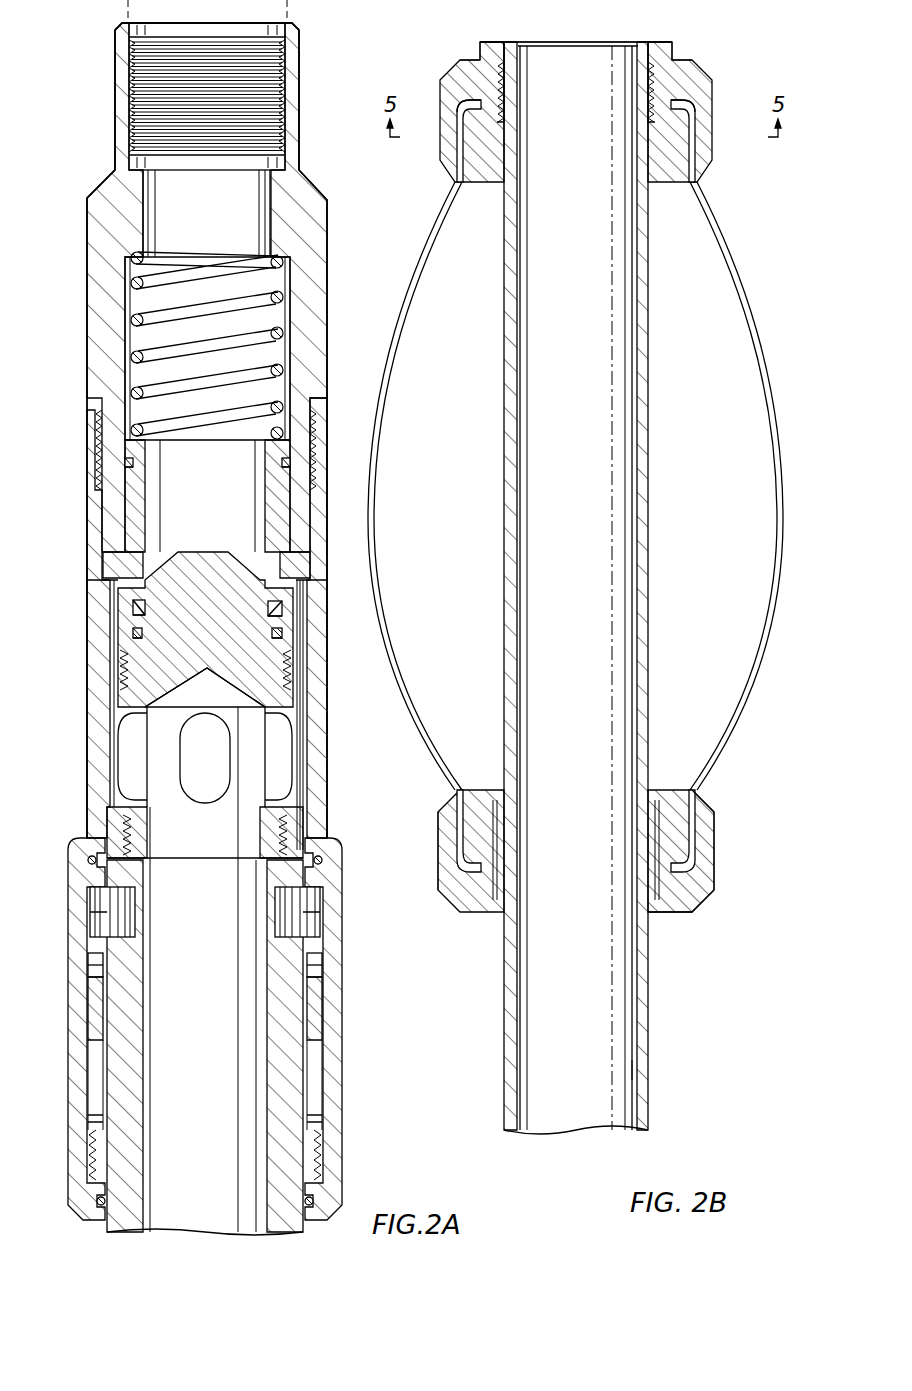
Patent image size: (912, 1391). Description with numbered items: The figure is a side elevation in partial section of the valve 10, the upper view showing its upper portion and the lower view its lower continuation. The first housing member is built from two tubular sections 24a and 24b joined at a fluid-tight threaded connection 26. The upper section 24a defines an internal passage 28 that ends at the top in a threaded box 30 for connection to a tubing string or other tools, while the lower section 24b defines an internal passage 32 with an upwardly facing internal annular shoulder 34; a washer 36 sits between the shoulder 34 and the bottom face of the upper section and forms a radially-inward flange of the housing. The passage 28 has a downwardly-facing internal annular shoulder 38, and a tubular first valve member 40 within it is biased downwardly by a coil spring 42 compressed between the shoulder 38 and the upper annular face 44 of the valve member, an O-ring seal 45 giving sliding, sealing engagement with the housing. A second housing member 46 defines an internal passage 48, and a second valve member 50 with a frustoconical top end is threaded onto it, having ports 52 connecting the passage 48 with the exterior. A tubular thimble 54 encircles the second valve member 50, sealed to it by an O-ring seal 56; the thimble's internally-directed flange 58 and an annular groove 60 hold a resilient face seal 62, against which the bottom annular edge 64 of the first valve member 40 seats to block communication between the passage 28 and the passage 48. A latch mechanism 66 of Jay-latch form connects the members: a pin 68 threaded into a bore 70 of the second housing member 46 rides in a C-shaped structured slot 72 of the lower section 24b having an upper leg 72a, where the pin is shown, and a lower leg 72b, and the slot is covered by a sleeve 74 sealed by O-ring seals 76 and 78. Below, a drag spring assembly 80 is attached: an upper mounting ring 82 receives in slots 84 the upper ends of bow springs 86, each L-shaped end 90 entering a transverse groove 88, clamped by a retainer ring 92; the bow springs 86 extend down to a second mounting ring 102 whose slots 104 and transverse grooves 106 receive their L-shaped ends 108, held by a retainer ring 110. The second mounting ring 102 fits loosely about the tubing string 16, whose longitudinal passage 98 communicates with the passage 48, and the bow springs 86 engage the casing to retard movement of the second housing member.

In FIG. 2A, the valve 10 is at (72, 270).
In FIG. 2B, the valve 10 is at (742, 62).
In FIG. 2B, the tubing string 16 is at (644, 1010).
In FIG. 2A, the upper section 24a is at (98, 354).
In FIG. 2A, the lower section 24b is at (90, 679).
In FIG. 2A, the threaded connection 26 is at (85, 459).
In FIG. 2A, the internal passage 28 is at (284, 285).
In FIG. 2A, the threaded box 30 is at (278, 78).
In FIG. 2A, the internal passage 32 is at (300, 762).
In FIG. 2A, the internal annular shoulder 34 is at (106, 583).
In FIG. 2A, the washer 36 is at (103, 569).
In FIG. 2A, the internal annular shoulder 38 is at (130, 250).
In FIG. 2A, the first valve member 40 is at (138, 518).
In FIG. 2A, the coil spring 42 is at (255, 331).
In FIG. 2A, the upper annular face 44 is at (126, 440).
In FIG. 2A, the O-ring seal 45 is at (126, 464).
In FIG. 2A, the second housing member 46 is at (283, 1087).
In FIG. 2B, the second housing member 46 is at (500, 42).
In FIG. 2A, the internal passage 48 is at (130, 1101).
In FIG. 2A, the second valve member 50 is at (140, 698).
In FIG. 2A, the ports 52 is at (130, 796).
In FIG. 2A, the thimble 54 is at (286, 674).
In FIG. 2A, the O-ring seal 56 is at (285, 637).
In FIG. 2A, the internally-directed flange 58 is at (272, 604).
In FIG. 2A, the annular groove 60 is at (283, 610).
In FIG. 2A, the face seal 62 is at (133, 610).
In FIG. 2A, the bottom annular edge 64 is at (283, 571).
In FIG. 2A, the latch mechanism 66 is at (70, 979).
In FIG. 2A, the pin 68 is at (313, 913).
In FIG. 2A, the threaded bore 70 is at (296, 930).
In FIG. 2A, the structured slot 72 is at (313, 1129).
In FIG. 2A, the upper leg 72a is at (313, 968).
In FIG. 2A, the lower leg 72b is at (316, 1049).
In FIG. 2A, the sleeve 74 is at (331, 1164).
In FIG. 2A, the O-ring seal 76 is at (322, 861).
In FIG. 2A, the O-ring seal 78 is at (313, 1202).
In FIG. 2B, the drag spring assembly 80 is at (737, 915).
In FIG. 2B, the upper mounting ring 82 is at (688, 166).
In FIG. 2B, the slots 84 is at (661, 73).
In FIG. 2B, the bow springs 86 is at (744, 298).
In FIG. 2B, the transverse groove 88 is at (683, 101).
In FIG. 2B, the L-shaped end 90 is at (470, 76).
In FIG. 2B, the retainer ring 92 is at (445, 161).
In FIG. 2B, the longitudinal passage 98 is at (628, 1071).
In FIG. 2B, the second mounting ring 102 is at (673, 908).
In FIG. 2B, the slots 104 is at (689, 893).
In FIG. 2B, the transverse grooves 106 is at (458, 888).
In FIG. 2B, the L-shaped ends 108 is at (690, 851).
In FIG. 2B, the retainer ring 110 is at (710, 808).